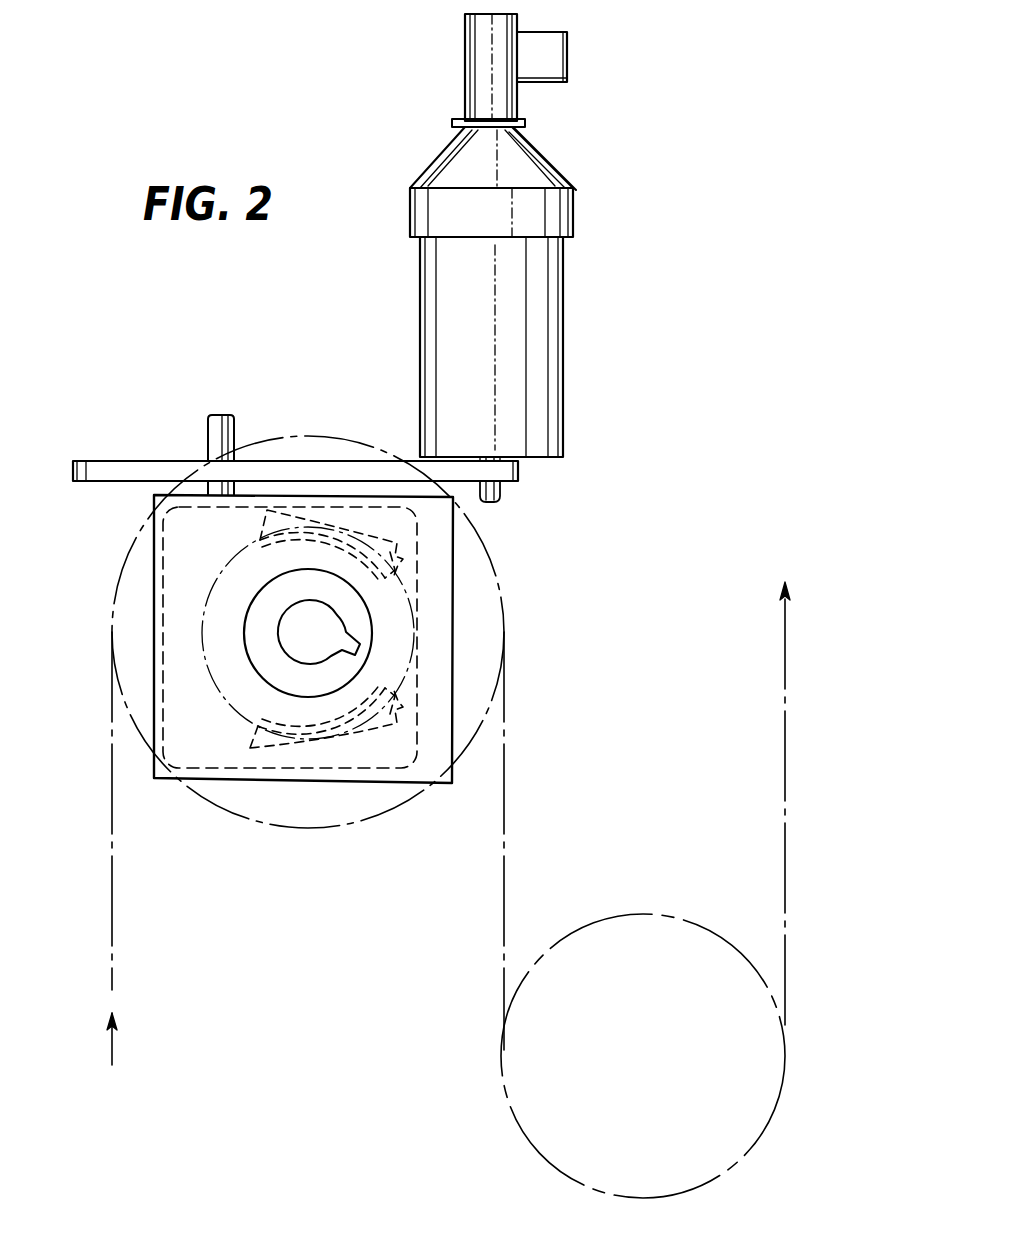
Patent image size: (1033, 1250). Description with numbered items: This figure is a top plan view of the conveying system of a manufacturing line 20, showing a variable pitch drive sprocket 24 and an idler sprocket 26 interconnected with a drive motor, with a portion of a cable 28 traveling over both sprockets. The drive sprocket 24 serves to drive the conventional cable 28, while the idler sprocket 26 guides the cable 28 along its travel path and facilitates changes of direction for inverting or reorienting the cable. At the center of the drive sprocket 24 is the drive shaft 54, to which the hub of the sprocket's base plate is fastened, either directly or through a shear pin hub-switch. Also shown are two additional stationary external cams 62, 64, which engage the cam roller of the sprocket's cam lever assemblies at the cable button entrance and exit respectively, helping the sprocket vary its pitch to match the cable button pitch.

The manufacturing line 20 is at (590, 320).
The drive sprocket 24 is at (258, 828).
The idler sprocket 26 is at (648, 878).
The cable 28 is at (505, 802).
The drive shaft 54 is at (292, 632).
The stationary external cam 62 is at (250, 740).
The stationary external cam 64 is at (423, 537).